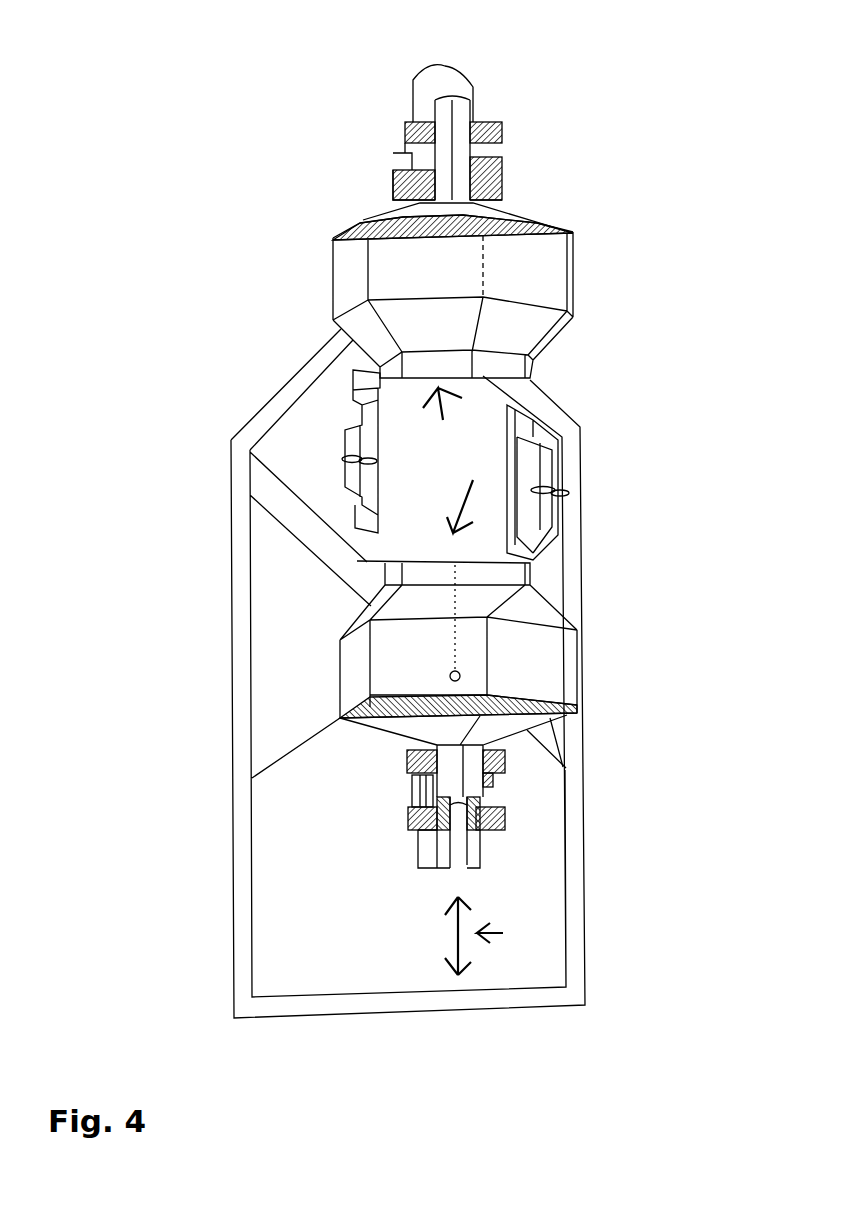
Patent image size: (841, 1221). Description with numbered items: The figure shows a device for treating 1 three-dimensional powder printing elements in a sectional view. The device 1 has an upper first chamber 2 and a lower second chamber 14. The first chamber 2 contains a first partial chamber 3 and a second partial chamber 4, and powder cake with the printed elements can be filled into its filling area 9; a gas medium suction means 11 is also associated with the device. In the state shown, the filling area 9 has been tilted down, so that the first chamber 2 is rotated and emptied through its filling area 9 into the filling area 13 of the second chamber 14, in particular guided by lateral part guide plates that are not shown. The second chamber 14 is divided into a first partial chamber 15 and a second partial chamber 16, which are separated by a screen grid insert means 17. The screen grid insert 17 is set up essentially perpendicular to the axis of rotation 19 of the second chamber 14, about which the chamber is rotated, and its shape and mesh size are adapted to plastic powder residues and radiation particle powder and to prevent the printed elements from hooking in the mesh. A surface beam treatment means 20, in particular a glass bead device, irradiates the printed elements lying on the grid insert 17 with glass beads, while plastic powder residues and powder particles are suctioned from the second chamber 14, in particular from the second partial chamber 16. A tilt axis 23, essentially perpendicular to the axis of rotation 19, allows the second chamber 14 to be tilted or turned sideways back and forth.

The device for treating 1 is at (235, 100).
The first chamber 2 is at (568, 252).
The first partial chamber 3 is at (532, 287).
The second partial chamber 4 is at (497, 218).
The filling area 9 is at (441, 421).
The gas medium suction means 11 is at (442, 62).
The filling area 13 is at (473, 491).
The second chamber 14 is at (553, 651).
The first partial chamber 15 is at (430, 667).
The second partial chamber 16 is at (393, 733).
The screen grid insert means 17 is at (400, 718).
The axis of rotation 19 is at (504, 936).
The surface beam treatment means 20 is at (560, 515).
The tilt axis 23 is at (461, 678).